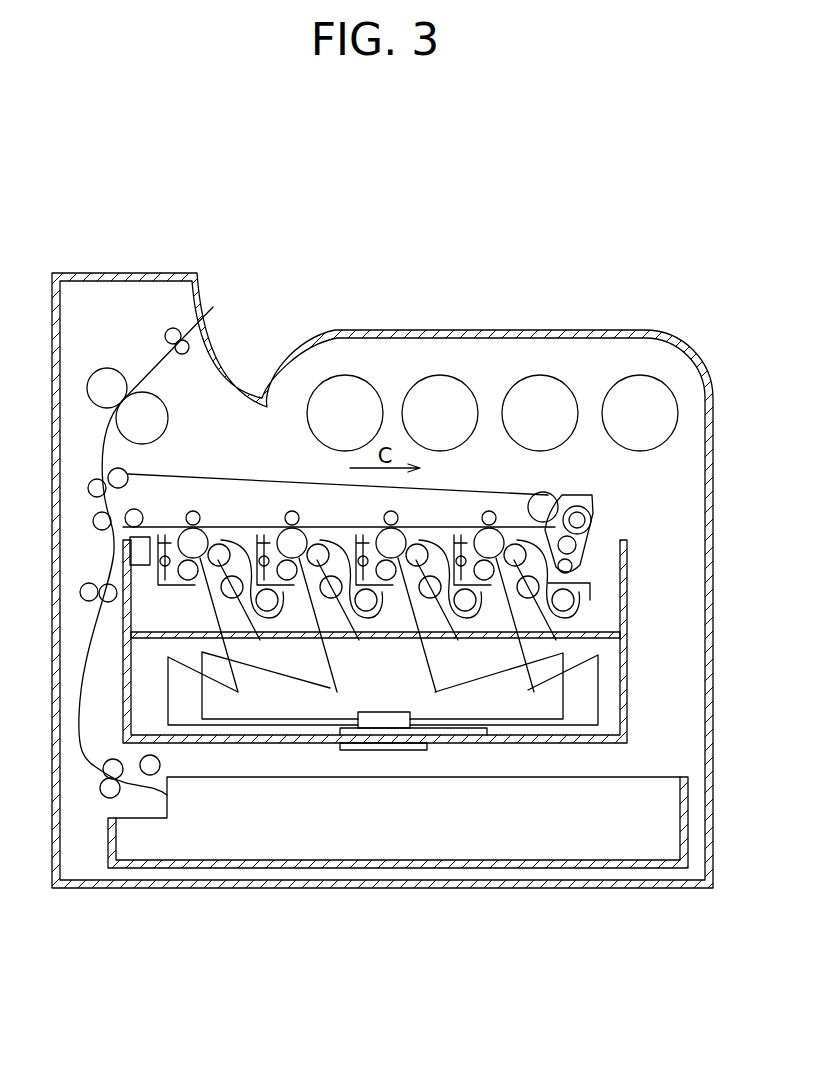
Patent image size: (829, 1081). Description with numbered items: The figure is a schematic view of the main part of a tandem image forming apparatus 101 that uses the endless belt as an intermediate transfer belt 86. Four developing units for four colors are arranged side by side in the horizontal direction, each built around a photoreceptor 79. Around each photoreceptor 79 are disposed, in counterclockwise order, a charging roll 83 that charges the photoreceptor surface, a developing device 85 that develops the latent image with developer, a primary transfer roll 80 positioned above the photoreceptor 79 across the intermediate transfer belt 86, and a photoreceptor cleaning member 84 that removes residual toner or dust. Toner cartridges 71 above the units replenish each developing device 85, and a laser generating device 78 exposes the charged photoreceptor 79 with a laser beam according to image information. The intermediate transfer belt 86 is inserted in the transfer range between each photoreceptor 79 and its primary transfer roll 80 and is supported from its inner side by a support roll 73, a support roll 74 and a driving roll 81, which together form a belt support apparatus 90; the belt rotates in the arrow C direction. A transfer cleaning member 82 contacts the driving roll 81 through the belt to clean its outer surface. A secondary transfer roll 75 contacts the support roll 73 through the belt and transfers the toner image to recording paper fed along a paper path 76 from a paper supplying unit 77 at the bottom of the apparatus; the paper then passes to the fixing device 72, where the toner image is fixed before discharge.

The image forming apparatus 101 is at (577, 219).
The toner cartridges 71 is at (407, 400).
The fixing device 72 is at (107, 368).
The support roll 73 is at (122, 476).
The support roll 74 is at (122, 533).
The secondary transfer roll 75 is at (95, 478).
The paper path 76 is at (83, 712).
The paper supplying unit 77 is at (468, 855).
The laser generating device 78 is at (381, 716).
The photoreceptor 79 is at (210, 537).
The primary transfer roll 80 is at (194, 514).
The driving roll 81 is at (553, 498).
The transfer cleaning member 82 is at (595, 500).
The charging roll 83 is at (190, 582).
The photoreceptor cleaning member 84 is at (163, 533).
The developing device 85 is at (270, 612).
The intermediate transfer belt 86 is at (278, 488).
The belt support apparatus 90 is at (231, 461).